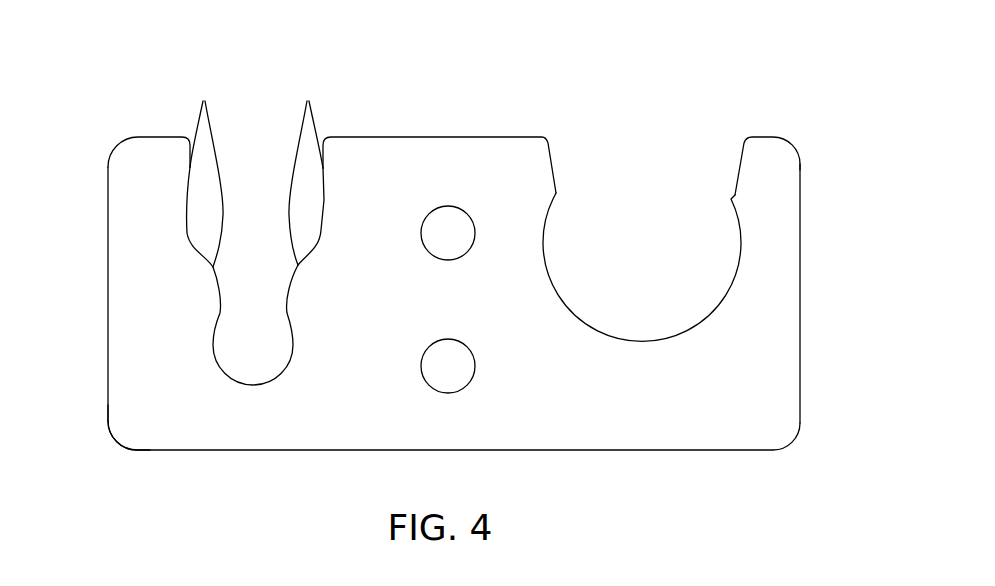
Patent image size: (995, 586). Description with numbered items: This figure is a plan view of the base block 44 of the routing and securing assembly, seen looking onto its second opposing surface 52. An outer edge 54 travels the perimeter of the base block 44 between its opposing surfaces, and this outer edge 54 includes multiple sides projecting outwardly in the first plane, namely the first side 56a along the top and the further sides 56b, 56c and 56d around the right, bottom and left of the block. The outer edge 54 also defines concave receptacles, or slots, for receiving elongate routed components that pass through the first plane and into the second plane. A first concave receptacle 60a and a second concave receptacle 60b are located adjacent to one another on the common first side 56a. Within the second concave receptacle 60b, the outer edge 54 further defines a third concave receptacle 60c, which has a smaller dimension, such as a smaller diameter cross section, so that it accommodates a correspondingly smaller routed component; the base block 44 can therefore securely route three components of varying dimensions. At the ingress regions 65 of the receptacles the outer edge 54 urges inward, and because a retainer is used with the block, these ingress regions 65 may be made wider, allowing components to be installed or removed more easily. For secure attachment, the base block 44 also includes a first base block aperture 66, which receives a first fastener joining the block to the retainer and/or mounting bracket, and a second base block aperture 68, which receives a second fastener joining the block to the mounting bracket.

The base block 44 is at (622, 70).
The second opposing surface 52 is at (348, 403).
The outer edge 54 is at (117, 437).
The first side 56a is at (435, 137).
The side 56b is at (798, 292).
The side 56c is at (453, 452).
The side 56d is at (108, 290).
The first concave receptacle 60a is at (642, 240).
The second concave receptacle 60b is at (249, 214).
The third concave receptacle 60c is at (246, 354).
The ingress regions 65 is at (738, 168).
The first base block aperture 66 is at (457, 240).
The second base block aperture 68 is at (457, 372).